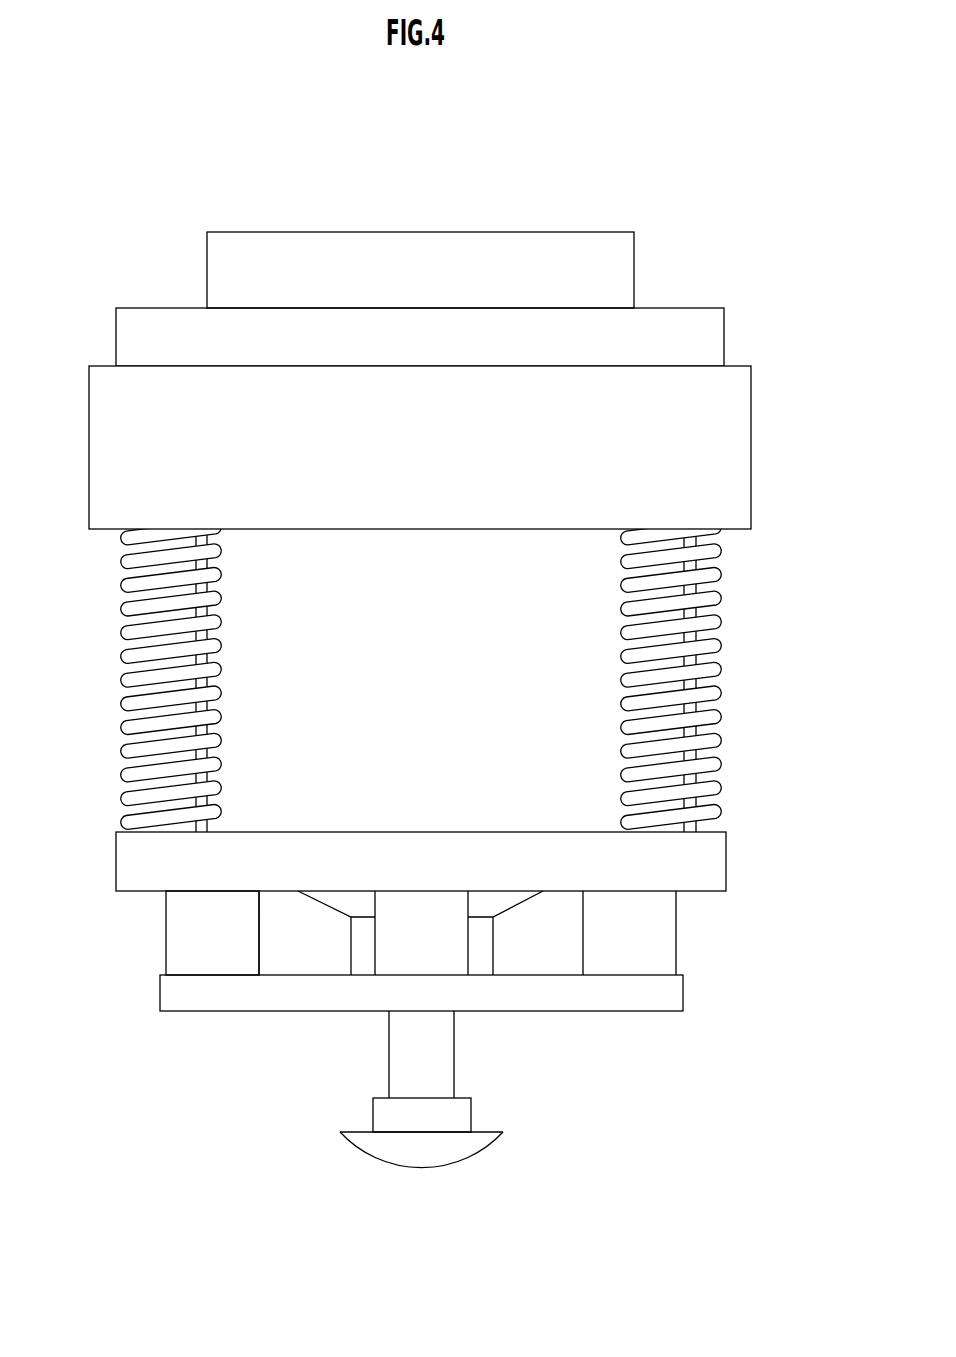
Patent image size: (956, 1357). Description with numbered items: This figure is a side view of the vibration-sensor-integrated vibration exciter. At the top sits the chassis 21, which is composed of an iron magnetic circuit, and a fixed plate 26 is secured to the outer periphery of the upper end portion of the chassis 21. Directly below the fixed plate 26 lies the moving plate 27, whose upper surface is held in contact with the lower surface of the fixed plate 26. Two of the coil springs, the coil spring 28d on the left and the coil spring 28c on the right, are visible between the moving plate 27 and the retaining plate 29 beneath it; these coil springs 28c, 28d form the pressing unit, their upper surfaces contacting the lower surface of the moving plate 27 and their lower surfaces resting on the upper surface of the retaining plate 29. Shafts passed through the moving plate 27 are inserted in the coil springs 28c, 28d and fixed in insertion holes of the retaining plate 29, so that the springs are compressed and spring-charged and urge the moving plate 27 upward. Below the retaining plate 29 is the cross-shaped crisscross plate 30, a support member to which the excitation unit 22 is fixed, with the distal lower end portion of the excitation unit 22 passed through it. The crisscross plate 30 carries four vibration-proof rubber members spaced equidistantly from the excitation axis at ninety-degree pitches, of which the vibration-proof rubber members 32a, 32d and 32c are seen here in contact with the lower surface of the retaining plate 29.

The chassis 21 is at (460, 250).
The fixed plate 26 is at (708, 338).
The moving plate 27 is at (738, 468).
The coil spring 28c is at (712, 645).
The coil spring 28d is at (125, 682).
The retaining plate 29 is at (705, 866).
The crisscross plate 30 is at (660, 995).
The vibration-proof rubber member 32a is at (180, 938).
The vibration-proof rubber member 32c is at (655, 933).
The vibration-proof rubber member 32d is at (400, 942).
The excitation unit 22 is at (473, 946).